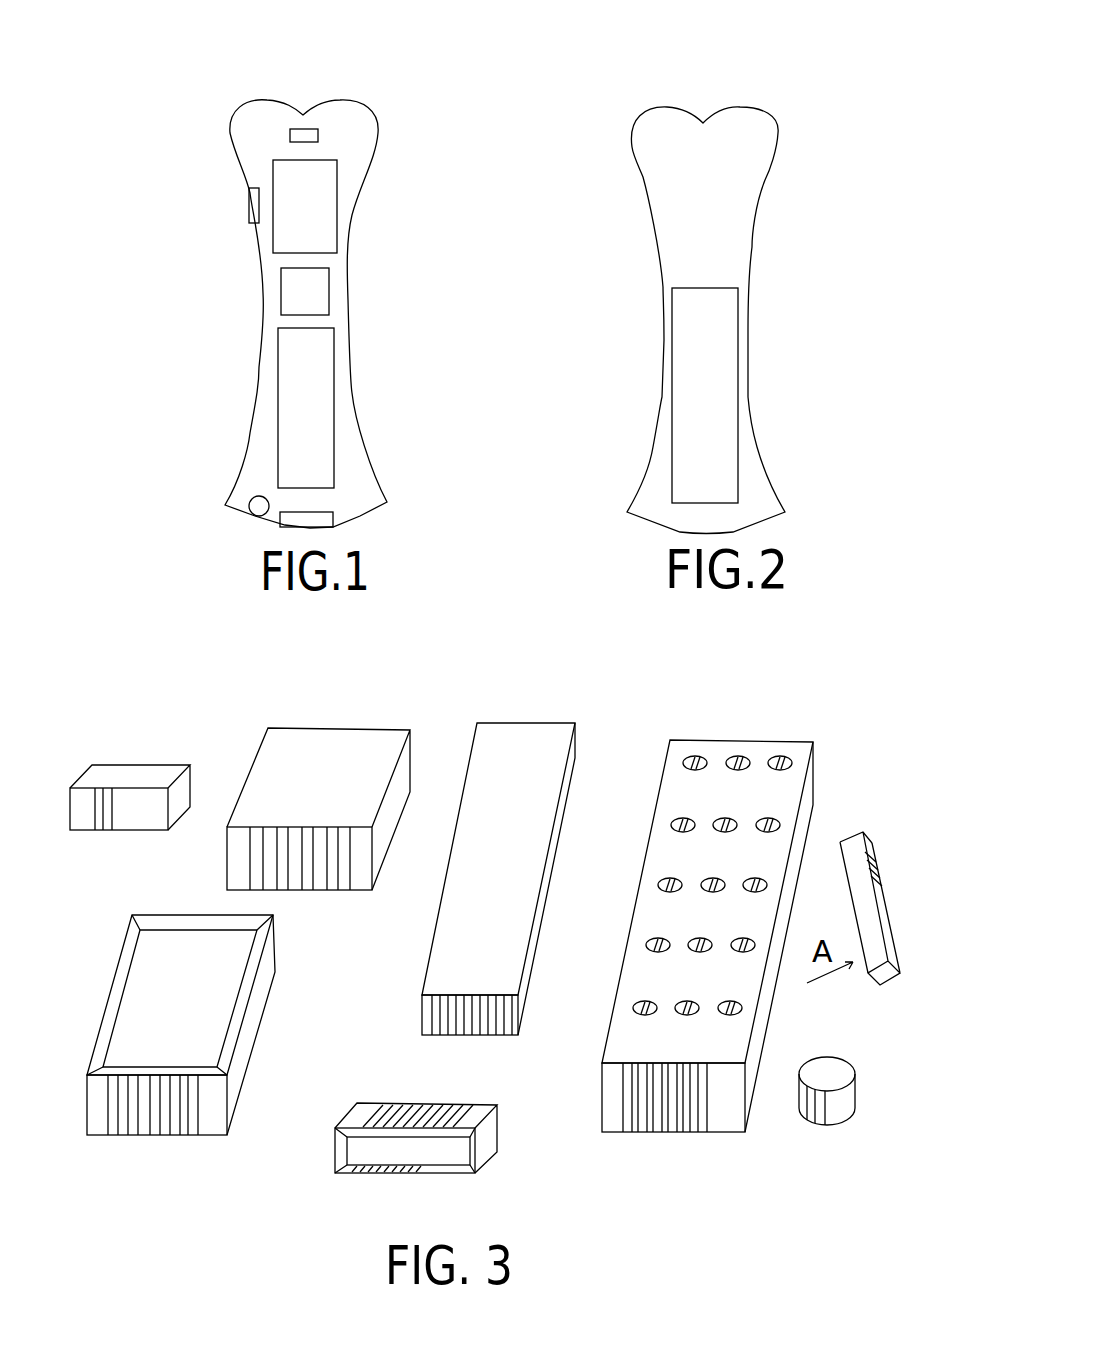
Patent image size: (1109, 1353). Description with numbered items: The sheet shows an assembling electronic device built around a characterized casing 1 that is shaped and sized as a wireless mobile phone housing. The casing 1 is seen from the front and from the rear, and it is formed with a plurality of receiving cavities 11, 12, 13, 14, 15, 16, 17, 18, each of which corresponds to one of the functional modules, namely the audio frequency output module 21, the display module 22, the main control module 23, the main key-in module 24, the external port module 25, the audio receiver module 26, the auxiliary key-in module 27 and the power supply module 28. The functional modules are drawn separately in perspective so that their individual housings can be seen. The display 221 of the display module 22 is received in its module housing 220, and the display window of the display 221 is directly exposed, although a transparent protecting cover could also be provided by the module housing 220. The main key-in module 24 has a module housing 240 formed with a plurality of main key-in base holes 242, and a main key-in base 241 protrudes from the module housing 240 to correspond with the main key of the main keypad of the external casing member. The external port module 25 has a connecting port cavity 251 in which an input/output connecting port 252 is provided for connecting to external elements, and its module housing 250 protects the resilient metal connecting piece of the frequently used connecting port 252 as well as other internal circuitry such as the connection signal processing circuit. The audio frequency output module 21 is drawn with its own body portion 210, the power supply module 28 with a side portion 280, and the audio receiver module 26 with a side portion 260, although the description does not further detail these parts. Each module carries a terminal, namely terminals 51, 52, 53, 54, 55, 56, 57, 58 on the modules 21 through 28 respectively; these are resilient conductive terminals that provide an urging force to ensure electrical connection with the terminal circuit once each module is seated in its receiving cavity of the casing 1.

In FIG. 1, the characterized casing 1 is at (358, 113).
In FIG. 2, the characterized casing 1 is at (757, 143).
In FIG. 1, the receiving cavity 11 is at (315, 137).
In FIG. 1, the receiving cavity 12 is at (328, 195).
In FIG. 1, the receiving cavity 13 is at (320, 283).
In FIG. 1, the receiving cavity 14 is at (313, 375).
In FIG. 1, the receiving cavity 15 is at (318, 518).
In FIG. 1, the receiving cavity 16 is at (257, 503).
In FIG. 1, the receiving cavity 17 is at (253, 202).
In FIG. 2, the receiving cavity 18 is at (743, 338).
In FIG. 3, the audio frequency output module 21 is at (134, 802).
In FIG. 3, the indicator block front face 210 is at (148, 830).
In FIG. 3, the terminal 51 is at (103, 828).
In FIG. 3, the display module 22 is at (205, 1037).
In FIG. 3, the module housing 220 is at (275, 962).
In FIG. 3, the display 221 is at (147, 975).
In FIG. 3, the terminal 52 is at (192, 1130).
In FIG. 3, the main control module 23 is at (326, 834).
In FIG. 3, the terminal 53 is at (343, 883).
In FIG. 3, the power supply module 28 is at (477, 884).
In FIG. 3, the speaker bar side face 280 is at (537, 965).
In FIG. 3, the terminal 58 is at (442, 1020).
In FIG. 3, the main key-in module 24 is at (709, 970).
In FIG. 3, the module housing 240 is at (727, 1132).
In FIG. 3, the main key-in base 241 is at (677, 825).
In FIG. 3, the main key-in base holes 242 is at (687, 765).
In FIG. 3, the terminal 54 is at (625, 1118).
In FIG. 3, the external port module 25 is at (444, 1145).
In FIG. 3, the module housing 250 is at (488, 1163).
In FIG. 3, the connecting port cavity 251 is at (438, 1153).
In FIG. 3, the input/output connecting port 252 is at (368, 1165).
In FIG. 3, the terminal 55 is at (427, 1107).
In FIG. 3, the audio receiver module 26 is at (862, 1101).
In FIG. 3, the microphone disc side 260 is at (853, 1110).
In FIG. 3, the terminal 56 is at (818, 1120).
In FIG. 3, the auxiliary key-in module 27 is at (888, 885).
In FIG. 3, the terminal 57 is at (878, 863).